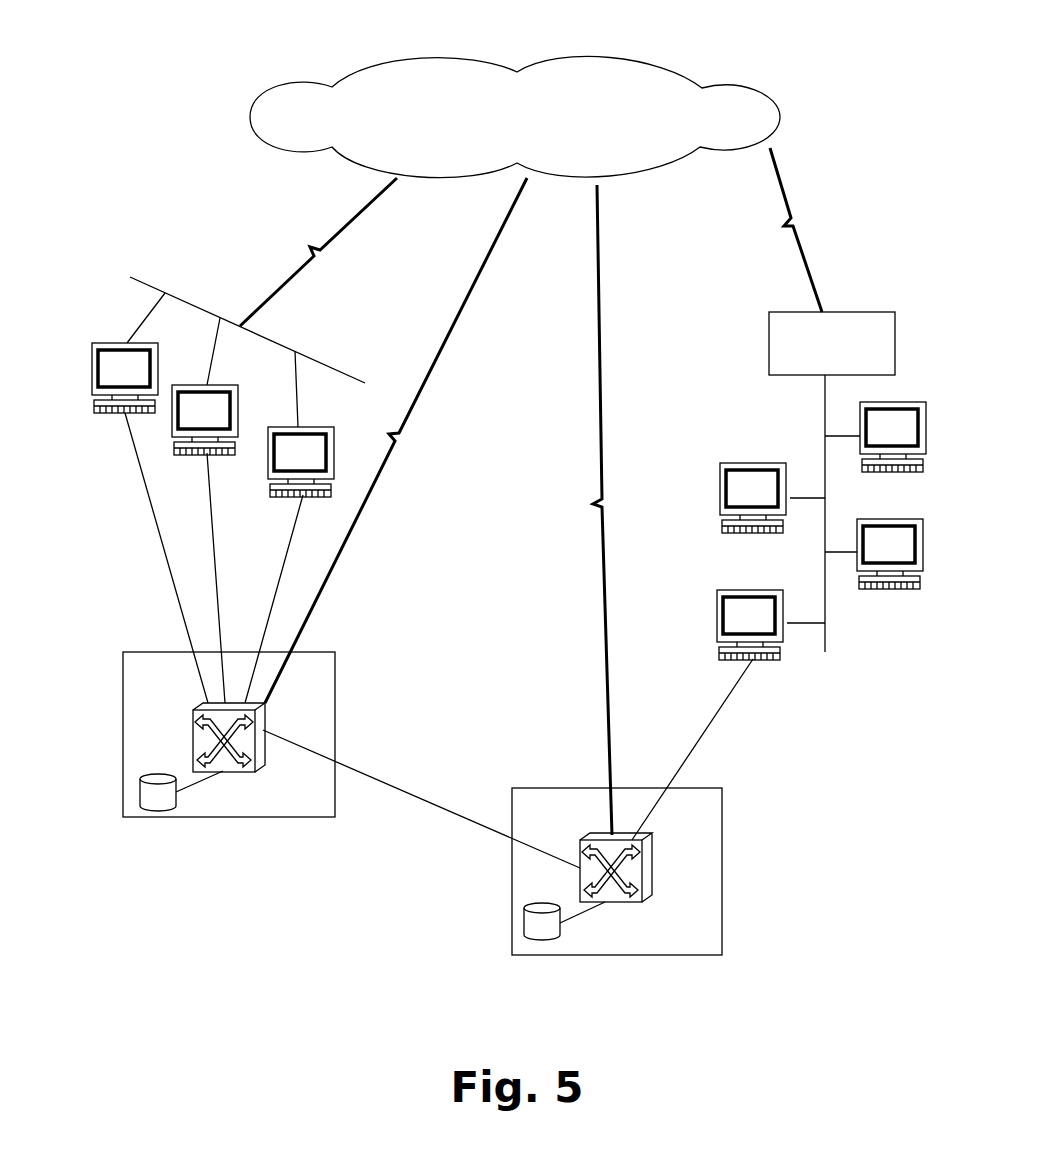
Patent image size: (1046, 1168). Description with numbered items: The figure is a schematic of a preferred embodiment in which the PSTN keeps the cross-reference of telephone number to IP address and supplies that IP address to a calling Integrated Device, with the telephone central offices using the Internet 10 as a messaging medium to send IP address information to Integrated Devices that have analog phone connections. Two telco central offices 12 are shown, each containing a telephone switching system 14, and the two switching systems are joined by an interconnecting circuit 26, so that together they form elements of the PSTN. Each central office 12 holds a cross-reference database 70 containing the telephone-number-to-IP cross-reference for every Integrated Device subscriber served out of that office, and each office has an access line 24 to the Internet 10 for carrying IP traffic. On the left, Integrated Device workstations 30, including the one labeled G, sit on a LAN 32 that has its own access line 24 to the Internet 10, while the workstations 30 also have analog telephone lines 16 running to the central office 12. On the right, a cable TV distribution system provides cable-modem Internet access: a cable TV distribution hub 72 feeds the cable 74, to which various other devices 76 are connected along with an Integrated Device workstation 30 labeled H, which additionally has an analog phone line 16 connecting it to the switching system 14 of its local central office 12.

The Internet 10 is at (388, 52).
The telco central office 12 is at (113, 722).
The telephone switching system 14 is at (240, 775).
The analog telephone line 16 is at (160, 570).
The access line 24 is at (362, 249).
The interconnecting circuit 26 is at (385, 797).
The Integrated Device workstation 30 is at (82, 348).
The LAN 32 is at (193, 292).
The cross-reference database 70 is at (140, 812).
The cable TV distribution hub 72 is at (762, 348).
The cable 74 is at (815, 425).
The other devices connected to the cable 76 is at (712, 475).